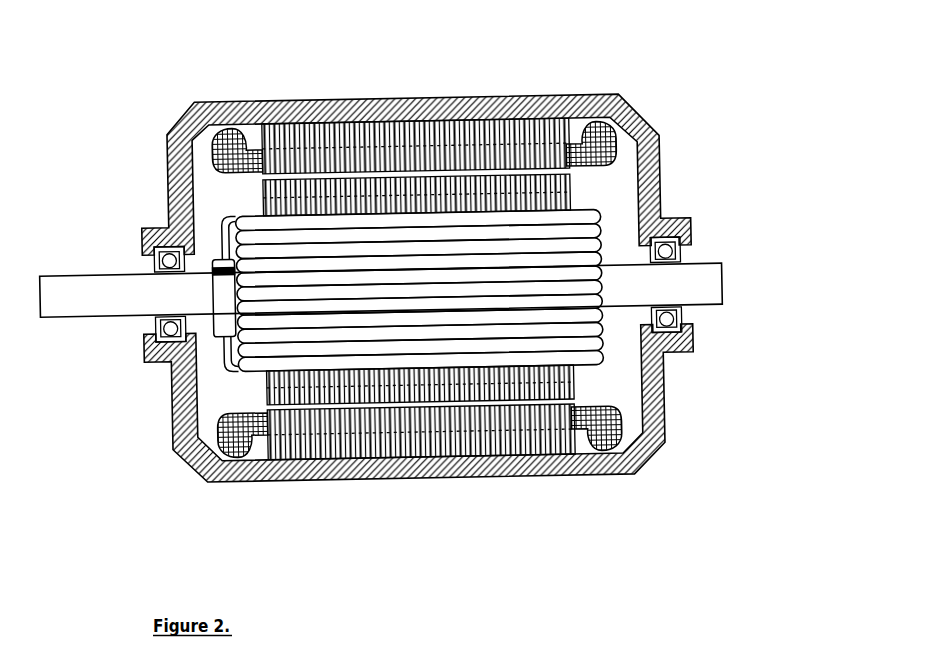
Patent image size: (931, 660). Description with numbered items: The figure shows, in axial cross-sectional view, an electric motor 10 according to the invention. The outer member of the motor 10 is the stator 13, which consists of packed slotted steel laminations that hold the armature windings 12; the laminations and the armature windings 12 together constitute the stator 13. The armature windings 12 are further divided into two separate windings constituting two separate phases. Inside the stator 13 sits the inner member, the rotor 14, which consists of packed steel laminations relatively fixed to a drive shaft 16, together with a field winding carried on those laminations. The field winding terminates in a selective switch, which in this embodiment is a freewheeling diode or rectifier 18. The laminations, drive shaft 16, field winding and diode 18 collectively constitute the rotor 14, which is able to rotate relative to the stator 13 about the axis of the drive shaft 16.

The electric motor 10 is at (692, 70).
The armature windings 12 is at (228, 150).
The stator 13 is at (347, 286).
The rotor 14 is at (477, 277).
The drive shaft 16 is at (70, 290).
The freewheeling diode or rectifier 18 is at (223, 320).